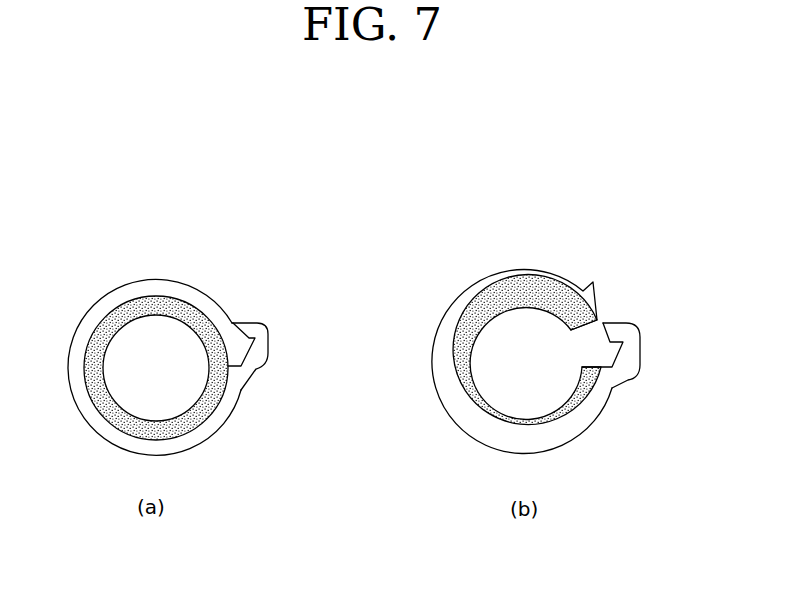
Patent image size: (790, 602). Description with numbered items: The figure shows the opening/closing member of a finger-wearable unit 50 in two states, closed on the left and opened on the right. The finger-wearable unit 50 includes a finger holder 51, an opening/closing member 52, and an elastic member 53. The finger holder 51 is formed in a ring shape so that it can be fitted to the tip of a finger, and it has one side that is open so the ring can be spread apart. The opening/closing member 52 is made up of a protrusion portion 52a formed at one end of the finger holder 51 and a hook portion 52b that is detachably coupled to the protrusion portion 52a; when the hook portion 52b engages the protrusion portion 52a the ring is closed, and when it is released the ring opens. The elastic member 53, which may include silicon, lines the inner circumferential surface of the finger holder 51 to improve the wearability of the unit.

The finger-wearable unit 50 is at (70, 247).
The finger holder 51 is at (187, 443).
The opening/closing member 52 is at (276, 314).
The protrusion portion 52a is at (247, 337).
The hook portion 52b is at (257, 373).
The elastic member 53 is at (108, 422).